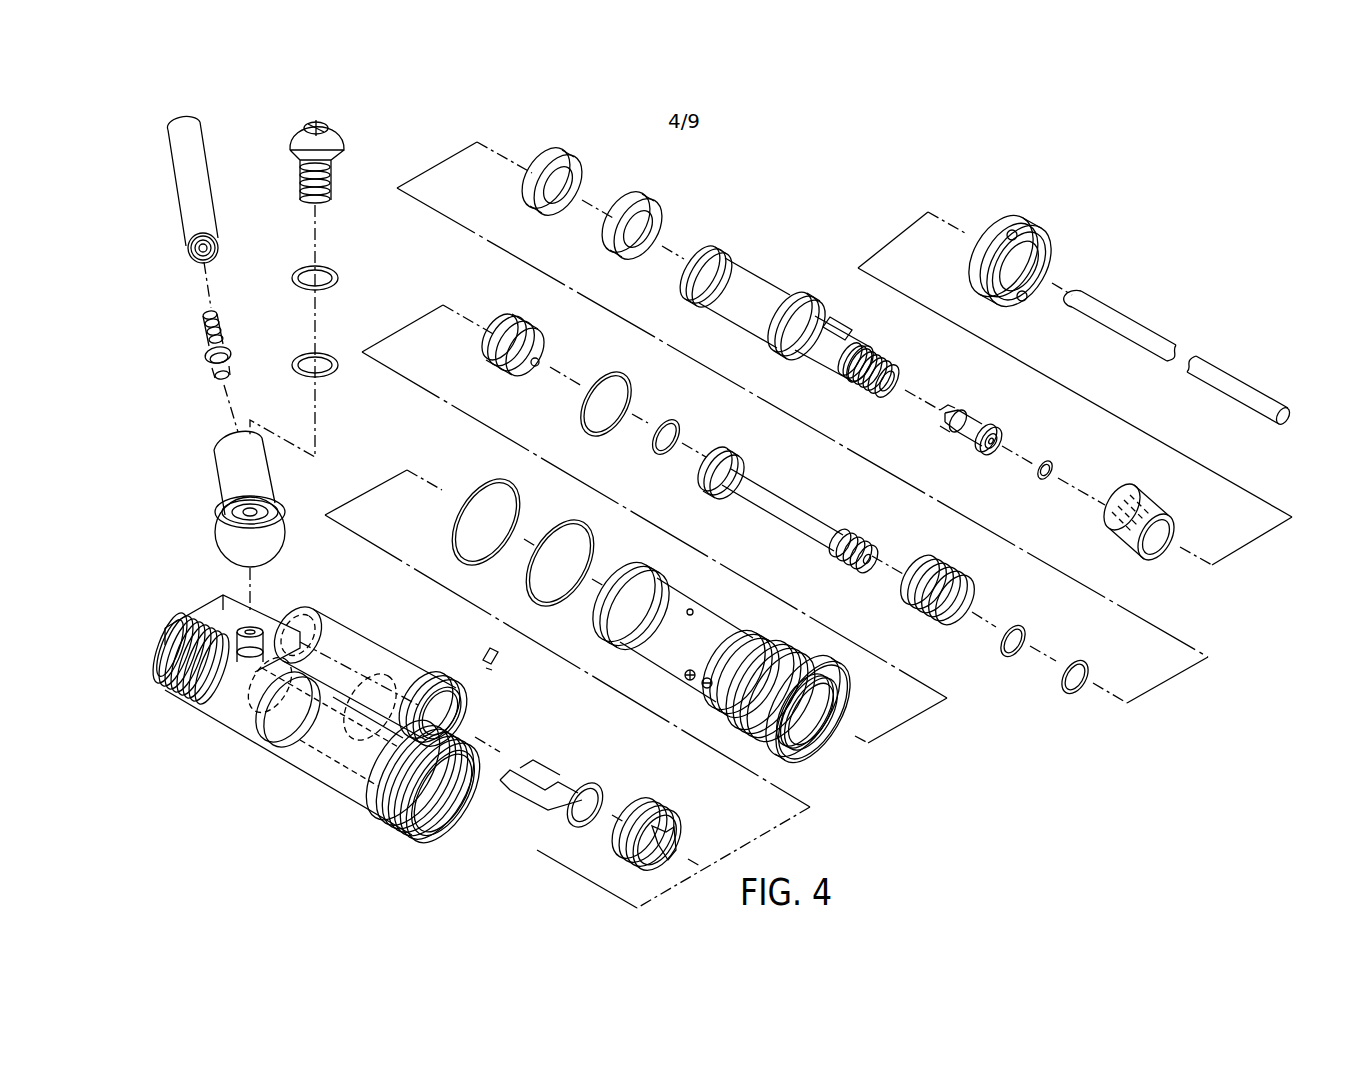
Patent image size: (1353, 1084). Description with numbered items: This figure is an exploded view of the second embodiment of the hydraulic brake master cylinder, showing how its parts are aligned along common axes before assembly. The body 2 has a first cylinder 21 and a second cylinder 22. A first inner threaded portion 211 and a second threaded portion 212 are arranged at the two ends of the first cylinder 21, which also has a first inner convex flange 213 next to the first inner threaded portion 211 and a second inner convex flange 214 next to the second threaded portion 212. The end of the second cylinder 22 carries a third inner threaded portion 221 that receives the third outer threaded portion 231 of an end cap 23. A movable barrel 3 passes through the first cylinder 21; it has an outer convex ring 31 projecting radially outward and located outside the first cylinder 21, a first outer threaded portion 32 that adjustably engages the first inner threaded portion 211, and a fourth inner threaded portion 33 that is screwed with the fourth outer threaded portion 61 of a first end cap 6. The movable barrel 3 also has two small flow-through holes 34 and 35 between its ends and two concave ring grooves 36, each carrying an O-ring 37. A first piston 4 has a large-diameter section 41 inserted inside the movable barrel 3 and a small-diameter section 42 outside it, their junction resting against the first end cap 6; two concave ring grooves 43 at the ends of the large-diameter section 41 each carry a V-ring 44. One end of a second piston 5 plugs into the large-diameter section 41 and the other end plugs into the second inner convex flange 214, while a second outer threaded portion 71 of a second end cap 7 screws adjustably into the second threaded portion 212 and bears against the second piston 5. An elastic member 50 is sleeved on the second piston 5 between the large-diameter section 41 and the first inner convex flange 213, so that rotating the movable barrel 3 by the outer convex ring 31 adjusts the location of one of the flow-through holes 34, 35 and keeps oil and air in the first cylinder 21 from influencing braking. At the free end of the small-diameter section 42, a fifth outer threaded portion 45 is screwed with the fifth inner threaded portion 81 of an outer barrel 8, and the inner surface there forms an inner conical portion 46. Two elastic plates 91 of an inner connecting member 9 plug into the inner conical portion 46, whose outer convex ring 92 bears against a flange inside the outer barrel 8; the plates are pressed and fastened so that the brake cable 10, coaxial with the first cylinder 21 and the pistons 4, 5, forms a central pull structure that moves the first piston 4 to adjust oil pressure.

The body 2 is at (325, 741).
The first cylinder 21 is at (351, 780).
The first inner threaded portion 211 is at (450, 818).
The second threaded portion 212 is at (170, 675).
The first inner convex flange 213 is at (262, 765).
The second inner convex flange 214 is at (226, 692).
The second cylinder 22 is at (415, 670).
The third inner threaded portion 221 is at (462, 706).
The end cap 23 is at (674, 813).
The third outer threaded portion 231 is at (652, 815).
The movable barrel 3 is at (746, 647).
The outer convex ring 31 is at (832, 721).
The first outer threaded portion 32 is at (812, 655).
The fourth inner threaded portion 33 is at (822, 725).
The flow-through hole 34 is at (692, 606).
The flow-through hole 35 is at (686, 678).
The concave ring groove 36 is at (645, 568).
The O-ring 37 is at (480, 483).
The first piston 4 is at (806, 303).
The large-diameter section 41 is at (743, 312).
The small-diameter section 42 is at (828, 360).
The concave ring groove 43 is at (713, 258).
The V-ring 44 is at (565, 166).
The fifth outer threaded portion 45 is at (885, 355).
The inner conical portion 46 is at (884, 392).
The second piston 5 is at (792, 500).
The elastic member 50 is at (970, 605).
The first end cap 6 is at (1025, 239).
The fourth outer threaded portion 61 is at (1011, 230).
The second end cap 7 is at (520, 320).
The second outer threaded portion 71 is at (503, 336).
The outer barrel 8 is at (1156, 556).
The fifth inner threaded portion 81 is at (1160, 545).
The inner connecting member 9 is at (970, 449).
The elastic plate 91 is at (972, 410).
The outer convex ring 92 is at (990, 443).
The brake cable 10 is at (1147, 323).